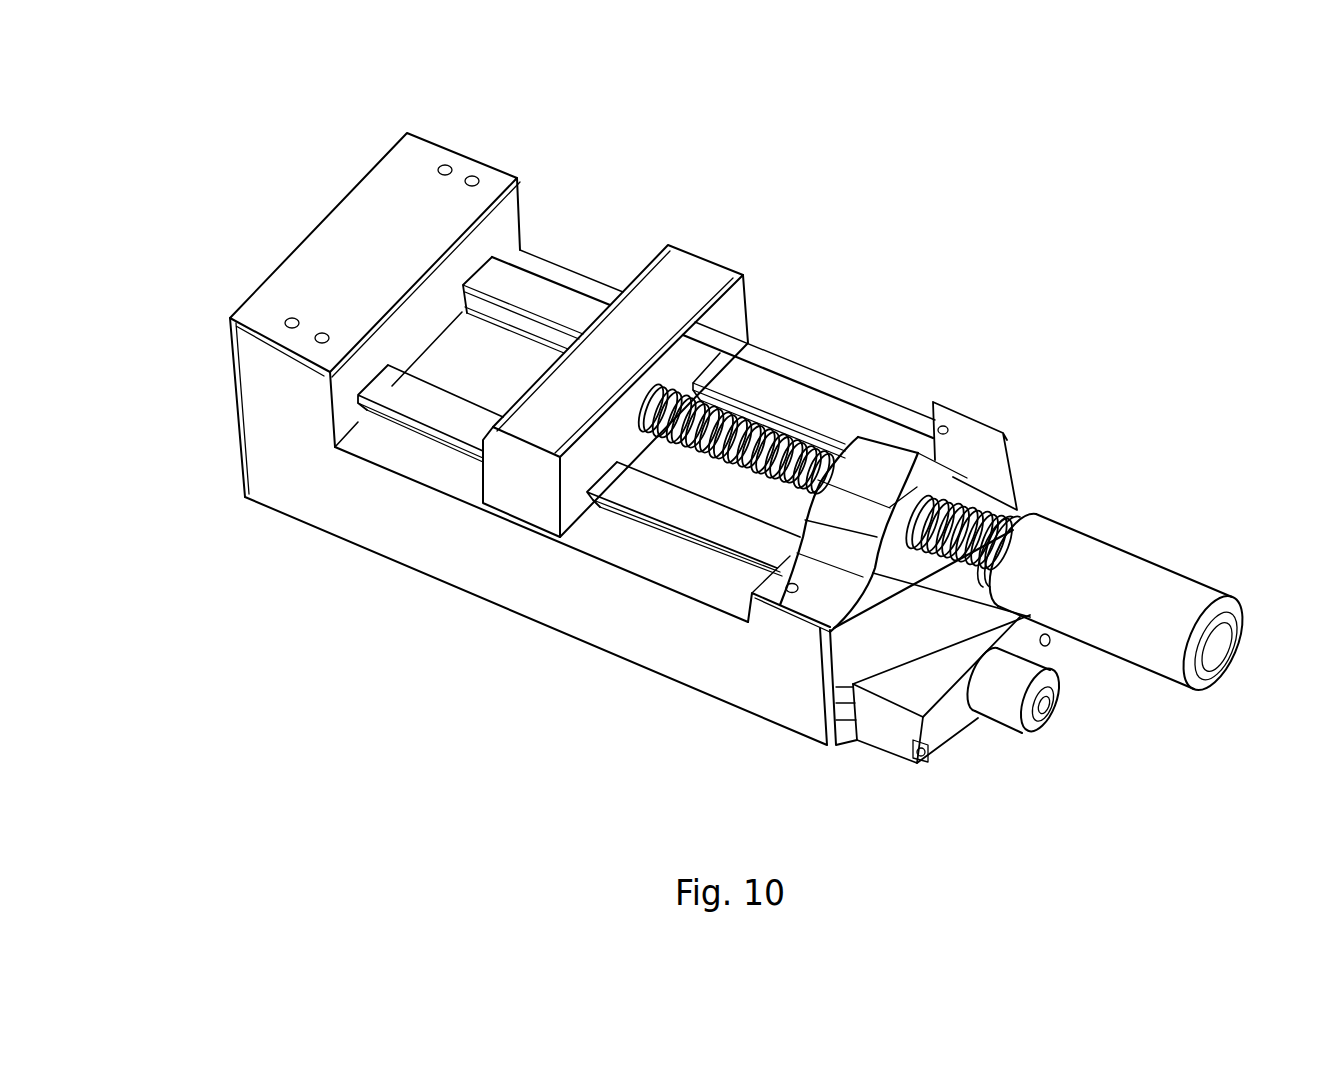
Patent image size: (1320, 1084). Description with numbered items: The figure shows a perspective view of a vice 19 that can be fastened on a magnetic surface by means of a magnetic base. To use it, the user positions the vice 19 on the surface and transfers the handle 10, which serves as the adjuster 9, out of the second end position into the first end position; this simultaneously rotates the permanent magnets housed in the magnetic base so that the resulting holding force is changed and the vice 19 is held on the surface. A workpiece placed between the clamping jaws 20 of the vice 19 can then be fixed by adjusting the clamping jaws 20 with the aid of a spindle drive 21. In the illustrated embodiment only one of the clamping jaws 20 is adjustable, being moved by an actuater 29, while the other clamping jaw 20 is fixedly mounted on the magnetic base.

The vice 19 is at (864, 296).
The clamping jaws 20 is at (373, 243).
The spindle drive 21 is at (735, 430).
The actuater 29 is at (1100, 570).
The adjuster 9 is at (1023, 708).
The handle 10 is at (1069, 745).